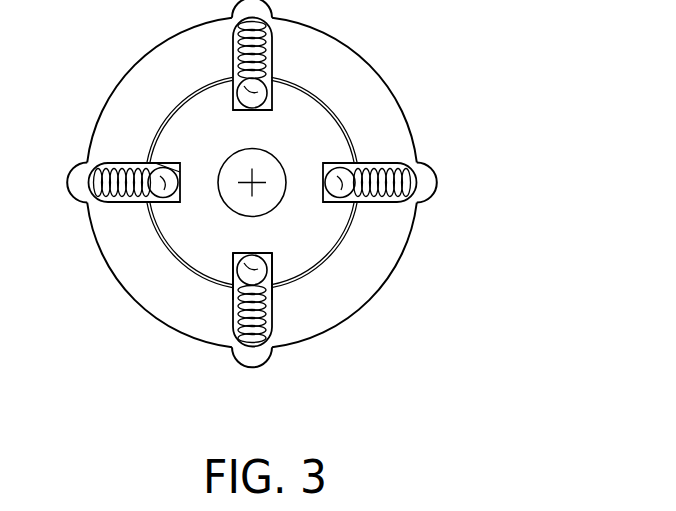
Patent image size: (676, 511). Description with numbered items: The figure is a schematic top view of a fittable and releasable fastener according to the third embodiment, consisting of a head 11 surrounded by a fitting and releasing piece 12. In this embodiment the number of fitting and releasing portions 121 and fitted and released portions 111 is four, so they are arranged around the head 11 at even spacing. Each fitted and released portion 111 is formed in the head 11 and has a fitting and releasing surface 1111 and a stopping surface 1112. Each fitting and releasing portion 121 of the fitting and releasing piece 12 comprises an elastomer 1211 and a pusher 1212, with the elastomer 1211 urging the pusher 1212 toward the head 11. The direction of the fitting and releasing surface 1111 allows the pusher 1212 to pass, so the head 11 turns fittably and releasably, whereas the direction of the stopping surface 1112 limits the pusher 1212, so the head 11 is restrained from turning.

The head 11 is at (203, 117).
The fitting and releasing piece 12 is at (332, 57).
The fitted and released portion 111 is at (148, 162).
The fitting and releasing surface 1111 is at (233, 283).
The stopping surface 1112 is at (272, 287).
The fitting and releasing portion 121 is at (351, 182).
The elastomer 1211 is at (333, 183).
The pusher 1212 is at (400, 196).